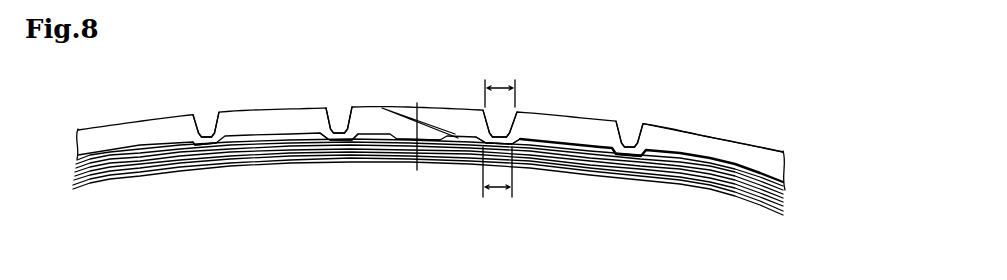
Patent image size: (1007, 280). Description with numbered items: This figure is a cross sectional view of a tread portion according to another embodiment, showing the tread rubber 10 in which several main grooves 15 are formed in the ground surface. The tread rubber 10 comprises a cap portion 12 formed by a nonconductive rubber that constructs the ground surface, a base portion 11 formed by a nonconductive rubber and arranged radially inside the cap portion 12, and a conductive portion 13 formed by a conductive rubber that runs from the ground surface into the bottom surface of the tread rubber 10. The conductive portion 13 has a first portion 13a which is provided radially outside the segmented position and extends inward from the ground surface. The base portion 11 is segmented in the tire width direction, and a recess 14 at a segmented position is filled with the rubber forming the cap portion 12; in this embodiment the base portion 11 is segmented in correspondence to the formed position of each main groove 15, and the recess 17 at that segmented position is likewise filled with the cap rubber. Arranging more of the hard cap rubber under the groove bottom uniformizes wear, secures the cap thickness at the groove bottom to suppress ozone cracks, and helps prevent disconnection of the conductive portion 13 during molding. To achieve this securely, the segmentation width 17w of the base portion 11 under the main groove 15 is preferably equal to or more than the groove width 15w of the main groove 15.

The tread rubber 10 is at (280, 108).
The base portion 11 is at (133, 148).
The cap portion 12 is at (718, 136).
The conductive portion 13 is at (753, 165).
The first portion 13a is at (427, 121).
The recess 14 is at (404, 140).
The main groove 15 is at (214, 132).
The groove width 15w is at (509, 80).
The recess 17 is at (207, 141).
The segmentation width 17w is at (500, 185).